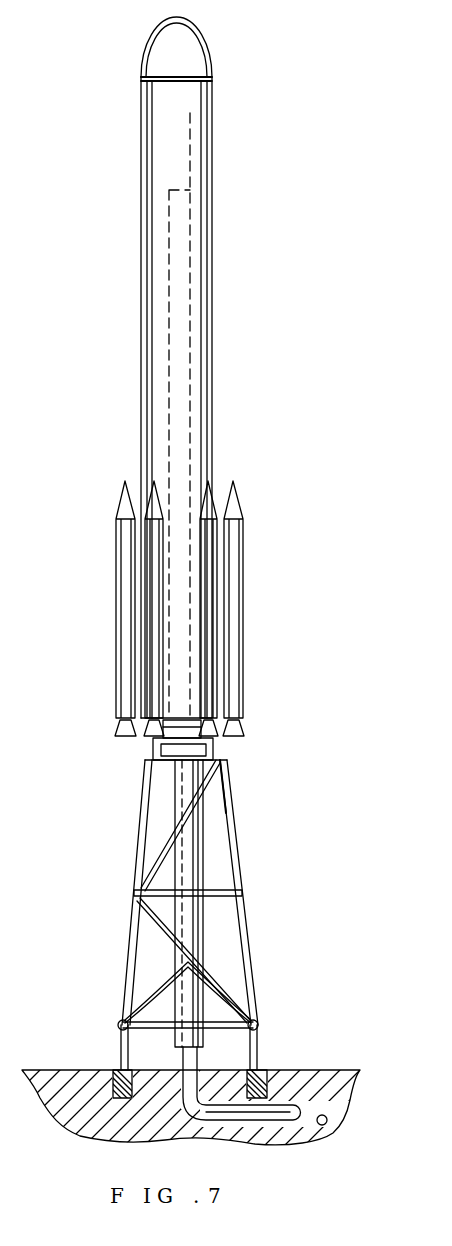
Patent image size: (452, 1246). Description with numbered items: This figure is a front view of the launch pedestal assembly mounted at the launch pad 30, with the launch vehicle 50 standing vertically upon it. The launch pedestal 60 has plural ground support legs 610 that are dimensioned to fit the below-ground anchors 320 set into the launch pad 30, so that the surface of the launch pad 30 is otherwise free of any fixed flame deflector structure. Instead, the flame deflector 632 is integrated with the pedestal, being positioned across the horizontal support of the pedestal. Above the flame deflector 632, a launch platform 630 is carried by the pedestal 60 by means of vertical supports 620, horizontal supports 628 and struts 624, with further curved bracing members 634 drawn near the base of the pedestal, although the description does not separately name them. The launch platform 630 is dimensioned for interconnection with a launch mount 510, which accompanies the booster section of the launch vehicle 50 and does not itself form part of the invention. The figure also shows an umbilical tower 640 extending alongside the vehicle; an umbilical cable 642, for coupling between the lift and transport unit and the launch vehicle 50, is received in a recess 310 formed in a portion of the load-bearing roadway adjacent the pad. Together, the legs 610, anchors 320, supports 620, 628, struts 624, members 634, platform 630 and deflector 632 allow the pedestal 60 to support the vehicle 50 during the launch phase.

The launch vehicle 50 is at (213, 240).
The launch mount 510 is at (220, 749).
The launch pedestal 60 is at (193, 929).
The vertical supports 620 is at (130, 922).
The struts 624 is at (228, 891).
The horizontal supports 628 is at (218, 891).
The launch platform 630 is at (226, 778).
The flame deflector 632 is at (240, 1005).
The curved braces 634 is at (160, 1000).
The ground support legs 610 is at (118, 1025).
The umbilical tower 640 is at (190, 865).
The umbilical cable 642 is at (228, 1122).
The below-ground anchors 320 is at (116, 1075).
The launch pad 30 is at (360, 1070).
The recess 310 is at (322, 1125).